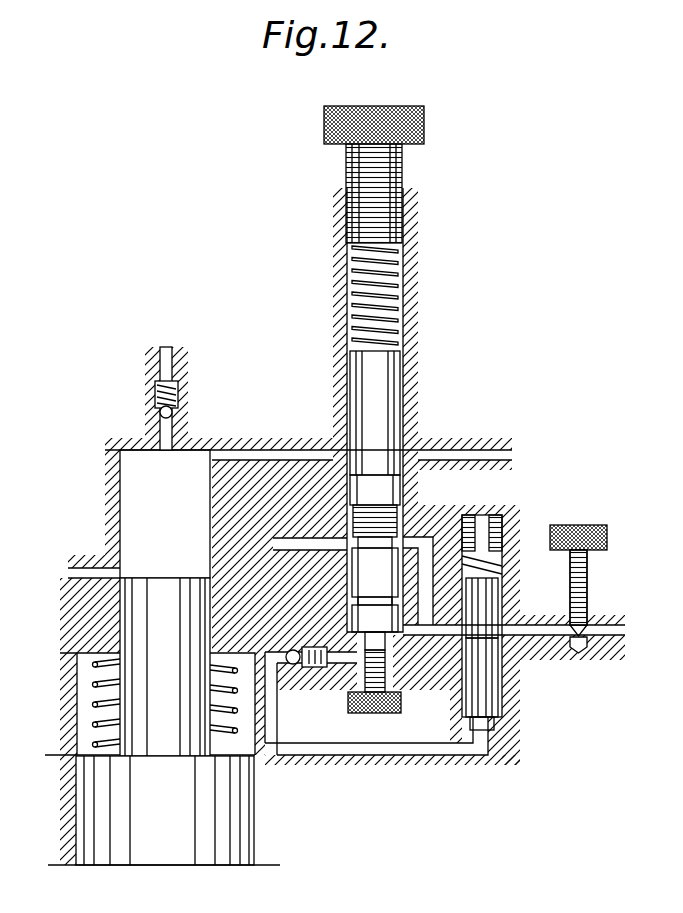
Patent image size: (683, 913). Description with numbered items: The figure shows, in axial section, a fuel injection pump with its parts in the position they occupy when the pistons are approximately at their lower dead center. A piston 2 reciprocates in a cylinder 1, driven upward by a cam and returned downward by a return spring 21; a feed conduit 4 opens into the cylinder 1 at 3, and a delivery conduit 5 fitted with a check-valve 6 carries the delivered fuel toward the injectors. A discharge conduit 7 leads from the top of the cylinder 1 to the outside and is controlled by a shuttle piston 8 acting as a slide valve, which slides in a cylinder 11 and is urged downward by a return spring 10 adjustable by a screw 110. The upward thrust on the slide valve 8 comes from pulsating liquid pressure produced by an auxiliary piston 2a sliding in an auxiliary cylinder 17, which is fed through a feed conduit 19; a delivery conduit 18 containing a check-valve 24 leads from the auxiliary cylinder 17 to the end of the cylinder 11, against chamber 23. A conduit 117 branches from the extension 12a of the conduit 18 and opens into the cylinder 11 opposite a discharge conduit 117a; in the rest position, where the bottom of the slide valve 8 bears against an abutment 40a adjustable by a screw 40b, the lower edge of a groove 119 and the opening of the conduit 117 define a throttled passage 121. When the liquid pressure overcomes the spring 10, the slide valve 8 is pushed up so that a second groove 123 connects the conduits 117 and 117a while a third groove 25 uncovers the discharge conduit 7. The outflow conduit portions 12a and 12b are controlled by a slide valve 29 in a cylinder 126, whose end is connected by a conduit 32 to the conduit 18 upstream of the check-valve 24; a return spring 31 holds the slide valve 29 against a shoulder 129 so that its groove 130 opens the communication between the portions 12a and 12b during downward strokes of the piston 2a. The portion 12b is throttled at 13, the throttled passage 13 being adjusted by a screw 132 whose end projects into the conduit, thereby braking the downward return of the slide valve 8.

The cylinder 1 is at (148, 494).
The piston 2 is at (140, 613).
The auxiliary piston 2a is at (237, 808).
The opening of the feed conduit 3 is at (122, 576).
The feed conduit 4 is at (88, 570).
The delivery conduit 5 is at (166, 347).
The check-valve 6 is at (160, 411).
The discharge conduit 7 is at (270, 450).
The shuttle piston 8 is at (388, 368).
The return spring 10 is at (400, 280).
The cylinder 11 is at (350, 280).
The extension of conduit 18 12a is at (447, 635).
The outflow conduit portion 12b is at (543, 635).
The throttled passage 13 is at (586, 642).
The auxiliary cylinder 17 is at (78, 697).
The delivery conduit 18 is at (341, 666).
The feed conduit 19 is at (56, 760).
The return spring 21 is at (234, 655).
The chamber 23 is at (387, 640).
The check-valve 24 is at (291, 650).
The third groove 25 is at (350, 491).
The slide valve 29 is at (468, 705).
The return spring 31 is at (504, 560).
The conduit 32 is at (386, 755).
The abutment 40a is at (311, 647).
The screw 40b is at (386, 686).
The screw 110 is at (347, 160).
The conduit 117 is at (426, 545).
The discharge conduit 117a is at (290, 548).
The groove 119 is at (374, 548).
The throttled passage 121 is at (370, 538).
The second groove 123 is at (358, 599).
The cylinder 126 is at (500, 528).
The shoulder 129 is at (497, 723).
The groove 130 is at (505, 618).
The screw 132 is at (588, 578).